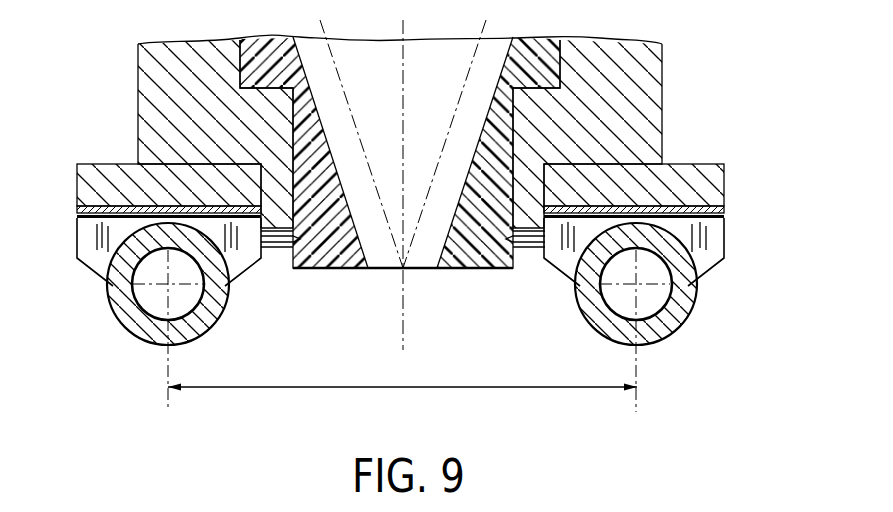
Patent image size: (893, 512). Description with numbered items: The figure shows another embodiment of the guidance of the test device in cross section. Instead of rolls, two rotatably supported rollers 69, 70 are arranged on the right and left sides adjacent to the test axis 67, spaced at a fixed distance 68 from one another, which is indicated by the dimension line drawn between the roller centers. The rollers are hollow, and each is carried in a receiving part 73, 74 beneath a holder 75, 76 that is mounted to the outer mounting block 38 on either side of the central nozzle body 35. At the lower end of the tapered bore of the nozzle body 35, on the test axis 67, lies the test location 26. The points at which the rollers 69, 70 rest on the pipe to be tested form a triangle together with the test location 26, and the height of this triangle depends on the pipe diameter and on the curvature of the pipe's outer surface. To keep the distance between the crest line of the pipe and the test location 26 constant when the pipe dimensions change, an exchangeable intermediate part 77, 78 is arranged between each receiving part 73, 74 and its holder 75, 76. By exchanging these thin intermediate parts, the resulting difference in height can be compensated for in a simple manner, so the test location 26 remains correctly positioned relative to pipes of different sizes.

The test location 26 is at (404, 268).
The nozzle body 35 is at (487, 255).
The mounting block 38 is at (640, 98).
The test axis 67 is at (404, 345).
The fixed distance 68 is at (288, 385).
The roller 69 is at (130, 322).
The roller 70 is at (687, 313).
The receiving part 73 is at (77, 258).
The receiving part 74 is at (712, 239).
The holder 75 is at (92, 183).
The holder 76 is at (705, 185).
The exchangeable intermediate part 77 is at (87, 213).
The exchangeable intermediate part 78 is at (725, 212).